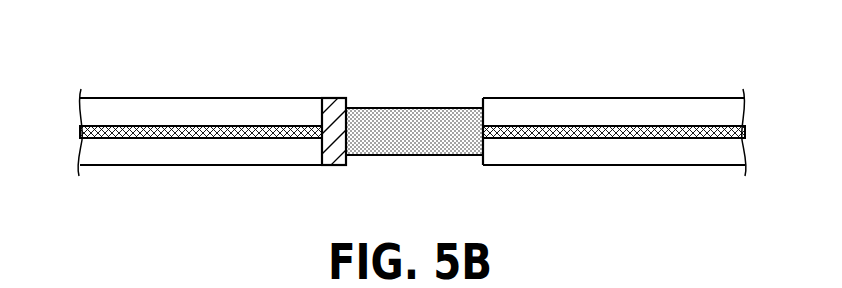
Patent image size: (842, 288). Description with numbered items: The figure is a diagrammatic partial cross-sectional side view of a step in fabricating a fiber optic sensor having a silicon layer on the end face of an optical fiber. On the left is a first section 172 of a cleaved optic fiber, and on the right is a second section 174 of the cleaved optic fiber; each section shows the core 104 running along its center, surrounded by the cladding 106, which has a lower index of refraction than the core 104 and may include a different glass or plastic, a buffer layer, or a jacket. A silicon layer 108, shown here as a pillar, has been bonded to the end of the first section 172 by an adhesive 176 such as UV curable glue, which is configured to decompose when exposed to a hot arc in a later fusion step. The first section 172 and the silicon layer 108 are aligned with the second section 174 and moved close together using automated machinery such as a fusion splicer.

The first section of the cleaved optic fiber 172 is at (115, 63).
The second section of the cleaved optic fiber 174 is at (708, 63).
The core 104 is at (183, 131).
The cladding 106 is at (118, 152).
The adhesive 176 is at (331, 103).
The silicon layer 108 is at (414, 120).